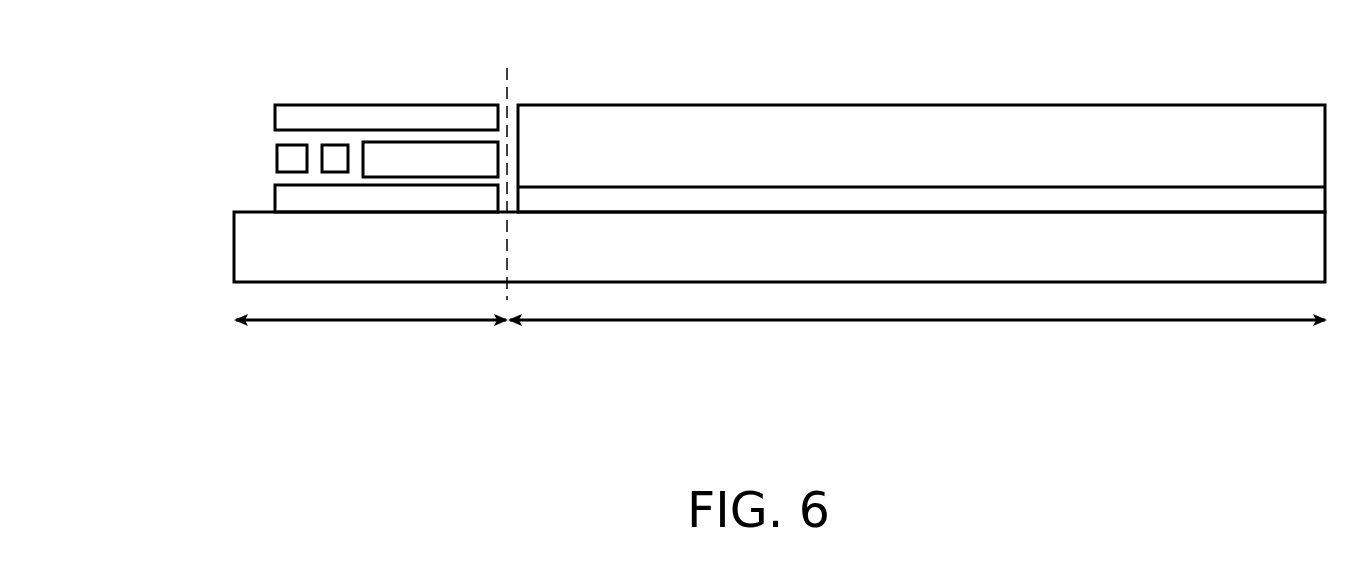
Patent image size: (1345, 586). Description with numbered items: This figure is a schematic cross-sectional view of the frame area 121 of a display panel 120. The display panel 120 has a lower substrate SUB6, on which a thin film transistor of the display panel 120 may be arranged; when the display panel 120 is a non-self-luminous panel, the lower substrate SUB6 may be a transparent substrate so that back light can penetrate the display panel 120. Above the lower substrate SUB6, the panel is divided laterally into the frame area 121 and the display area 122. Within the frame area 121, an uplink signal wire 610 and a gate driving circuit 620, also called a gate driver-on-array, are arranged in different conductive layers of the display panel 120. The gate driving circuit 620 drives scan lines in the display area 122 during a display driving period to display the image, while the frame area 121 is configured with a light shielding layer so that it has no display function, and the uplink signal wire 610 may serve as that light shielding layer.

The lower substrate SUB6 is at (252, 245).
The display panel 120 is at (614, 342).
The frame area 121 is at (371, 337).
The display area 122 is at (917, 339).
The uplink signal wire 610 is at (335, 113).
The gate driving circuit 620 is at (425, 155).